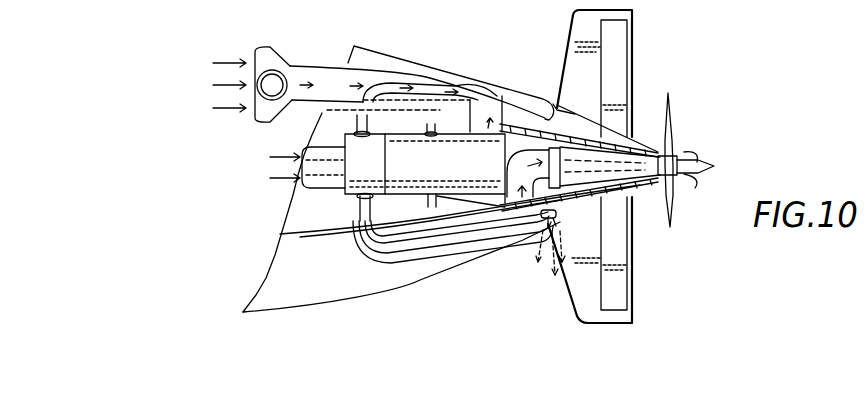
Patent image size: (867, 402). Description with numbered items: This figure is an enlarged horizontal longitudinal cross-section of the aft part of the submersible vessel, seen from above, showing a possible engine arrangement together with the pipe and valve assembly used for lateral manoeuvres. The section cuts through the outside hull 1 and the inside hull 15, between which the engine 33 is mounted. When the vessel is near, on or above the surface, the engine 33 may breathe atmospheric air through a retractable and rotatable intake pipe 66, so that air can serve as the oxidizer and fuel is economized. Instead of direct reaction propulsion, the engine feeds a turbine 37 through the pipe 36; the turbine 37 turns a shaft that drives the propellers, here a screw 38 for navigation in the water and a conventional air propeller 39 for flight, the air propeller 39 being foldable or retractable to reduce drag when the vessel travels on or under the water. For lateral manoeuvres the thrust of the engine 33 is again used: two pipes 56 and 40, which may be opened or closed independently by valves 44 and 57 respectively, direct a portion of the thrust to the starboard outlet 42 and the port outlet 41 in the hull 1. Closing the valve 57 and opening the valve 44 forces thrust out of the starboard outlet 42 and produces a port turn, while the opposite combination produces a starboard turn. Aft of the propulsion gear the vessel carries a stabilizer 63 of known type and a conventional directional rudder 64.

The outside hull 1 is at (282, 309).
The inside hull 15 is at (279, 246).
The engine 33 is at (387, 168).
The pipe 36 is at (356, 218).
The turbine 37 is at (610, 186).
The screw 38 is at (696, 160).
The air propeller 39 is at (672, 132).
The pipe 40 is at (420, 245).
The port outlet 41 is at (557, 230).
The starboard outlet 42 is at (551, 100).
The valve 44 is at (558, 102).
The pipe 56 is at (458, 98).
The valve 57 is at (540, 233).
The stabilizer 63 is at (634, 13).
The rudder 64 is at (612, 73).
The intake pipe 66 is at (266, 63).